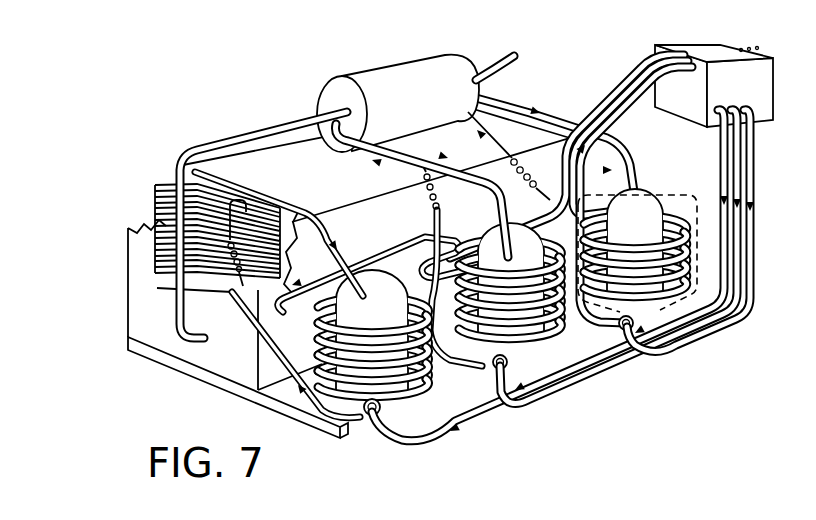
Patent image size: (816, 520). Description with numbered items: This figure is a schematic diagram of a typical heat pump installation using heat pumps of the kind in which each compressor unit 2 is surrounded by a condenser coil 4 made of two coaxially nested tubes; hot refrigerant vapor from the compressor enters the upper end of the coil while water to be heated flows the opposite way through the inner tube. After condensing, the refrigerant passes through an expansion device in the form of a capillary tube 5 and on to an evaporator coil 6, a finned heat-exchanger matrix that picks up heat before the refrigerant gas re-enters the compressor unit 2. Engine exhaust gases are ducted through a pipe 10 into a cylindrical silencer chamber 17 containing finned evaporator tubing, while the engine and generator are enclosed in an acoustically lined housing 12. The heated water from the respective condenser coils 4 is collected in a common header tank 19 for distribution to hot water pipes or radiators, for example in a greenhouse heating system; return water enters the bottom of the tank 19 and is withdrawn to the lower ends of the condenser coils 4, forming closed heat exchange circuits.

The compressor unit 2 is at (363, 273).
The condenser coil 4 is at (320, 343).
The capillary tube 5 is at (443, 192).
The evaporator coil 6 is at (158, 188).
The pipe 10 is at (253, 135).
The housing 12 is at (193, 363).
The cylindrical silencer chamber 17 is at (375, 73).
The header tank 19 is at (688, 110).